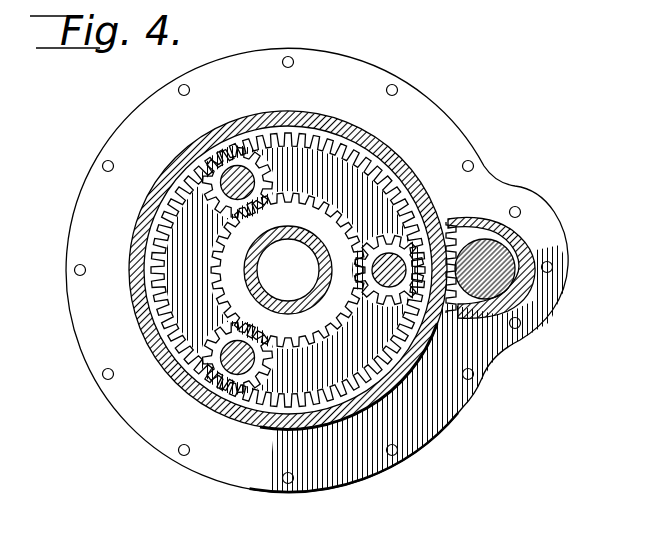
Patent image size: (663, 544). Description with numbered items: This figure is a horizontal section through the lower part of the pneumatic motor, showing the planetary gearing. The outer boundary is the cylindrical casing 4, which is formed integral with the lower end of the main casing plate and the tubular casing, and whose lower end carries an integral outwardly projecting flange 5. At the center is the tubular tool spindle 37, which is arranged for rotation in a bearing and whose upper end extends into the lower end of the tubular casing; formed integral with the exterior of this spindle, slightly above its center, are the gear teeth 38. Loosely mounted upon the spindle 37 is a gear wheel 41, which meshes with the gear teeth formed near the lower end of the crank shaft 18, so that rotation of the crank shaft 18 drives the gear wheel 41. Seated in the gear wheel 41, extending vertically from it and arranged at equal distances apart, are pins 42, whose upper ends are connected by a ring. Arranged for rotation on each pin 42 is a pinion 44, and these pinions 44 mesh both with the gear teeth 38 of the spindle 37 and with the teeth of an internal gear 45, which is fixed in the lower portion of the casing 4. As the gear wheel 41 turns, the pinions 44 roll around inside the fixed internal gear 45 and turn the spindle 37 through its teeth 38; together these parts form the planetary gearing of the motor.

The cylindrical casing 4 is at (178, 388).
The outwardly projecting flange 5 is at (413, 107).
The crank shaft 18 is at (485, 269).
The tubular tool spindle 37 is at (288, 270).
The gear teeth 38 is at (218, 292).
The gear wheel 41 is at (485, 204).
The pins 42 is at (232, 170).
The pinion 44 is at (265, 137).
The internal gear 45 is at (263, 410).